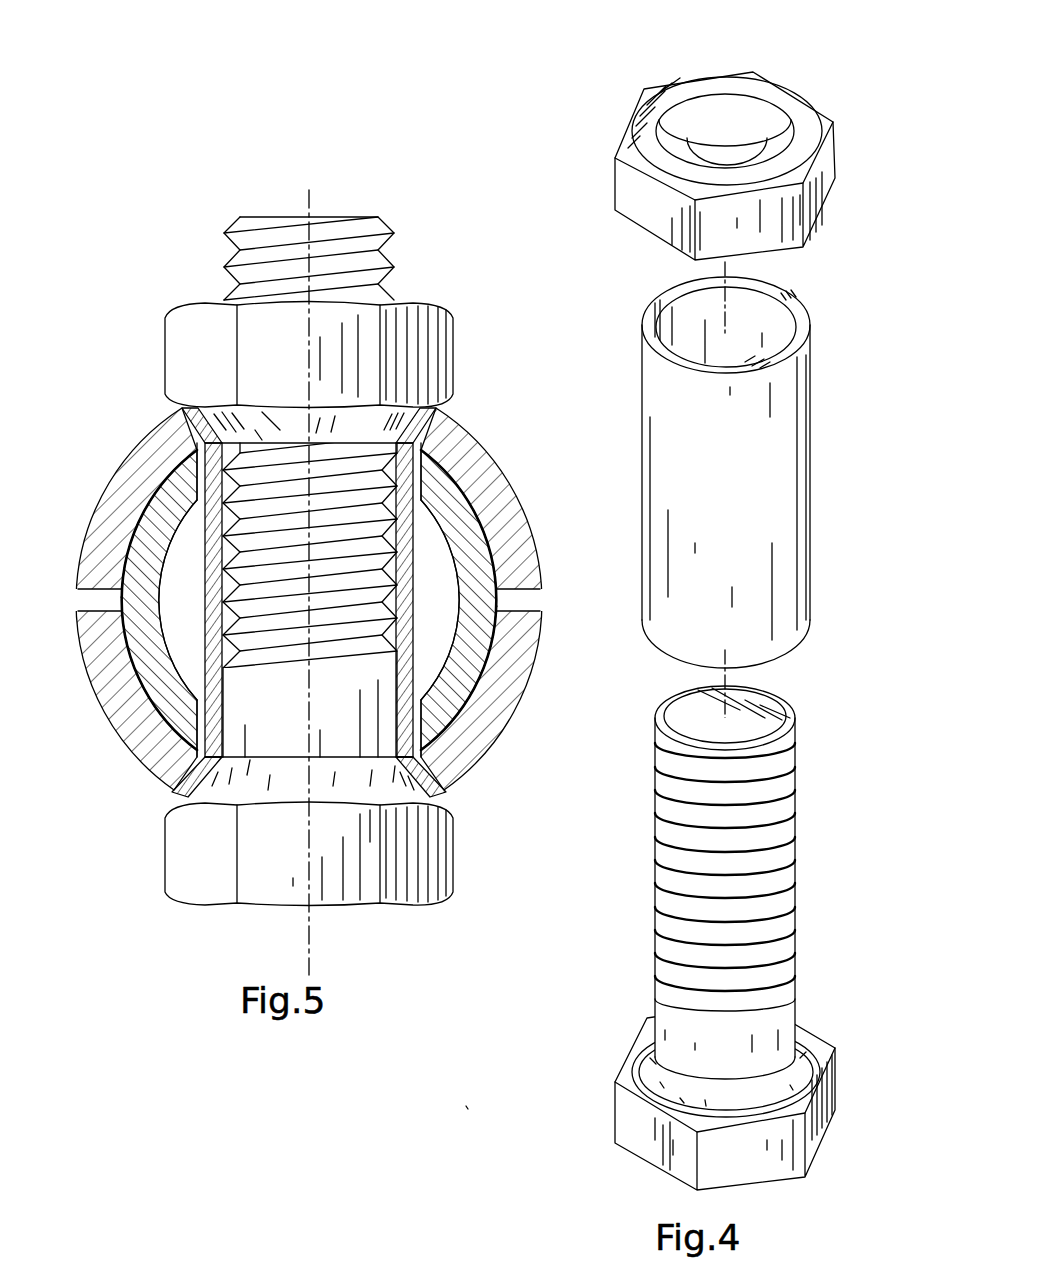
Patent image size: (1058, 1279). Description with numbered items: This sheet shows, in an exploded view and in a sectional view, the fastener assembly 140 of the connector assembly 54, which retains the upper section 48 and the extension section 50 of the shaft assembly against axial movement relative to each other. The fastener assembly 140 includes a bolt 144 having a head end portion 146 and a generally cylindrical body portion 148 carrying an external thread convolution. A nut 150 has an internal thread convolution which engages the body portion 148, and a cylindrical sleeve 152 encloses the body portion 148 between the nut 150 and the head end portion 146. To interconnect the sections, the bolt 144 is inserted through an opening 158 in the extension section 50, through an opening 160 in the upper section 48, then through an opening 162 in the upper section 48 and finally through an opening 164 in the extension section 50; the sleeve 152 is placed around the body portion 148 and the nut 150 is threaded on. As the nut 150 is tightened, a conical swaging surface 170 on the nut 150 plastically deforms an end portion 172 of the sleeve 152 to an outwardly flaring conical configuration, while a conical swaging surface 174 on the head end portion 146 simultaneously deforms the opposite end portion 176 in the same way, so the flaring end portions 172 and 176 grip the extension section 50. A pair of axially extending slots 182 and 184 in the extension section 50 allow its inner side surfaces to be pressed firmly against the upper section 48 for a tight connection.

In FIG. 5, the upper section 48 is at (140, 700).
In FIG. 5, the extension section 50 is at (82, 669).
In FIG. 5, the connector assembly 54 is at (366, 188).
In FIG. 5, the fastener assembly 140 is at (325, 207).
In FIG. 4, the fastener assembly 140 is at (749, 52).
In FIG. 5, the bolt 144 is at (390, 221).
In FIG. 4, the bolt 144 is at (808, 952).
In FIG. 5, the head end portion 146 is at (430, 896).
In FIG. 4, the head end portion 146 is at (833, 1120).
In FIG. 5, the body portion 148 is at (386, 533).
In FIG. 4, the body portion 148 is at (775, 832).
In FIG. 5, the nut 150 is at (437, 343).
In FIG. 4, the nut 150 is at (820, 180).
In FIG. 5, the cylindrical sleeve 152 is at (399, 618).
In FIG. 4, the cylindrical sleeve 152 is at (771, 472).
In FIG. 5, the opening 158 is at (170, 777).
In FIG. 5, the opening 160 is at (190, 735).
In FIG. 5, the opening 162 is at (137, 490).
In FIG. 5, the opening 164 is at (177, 433).
In FIG. 5, the conical swaging surface 170 is at (293, 420).
In FIG. 5, the end portion 172 is at (427, 415).
In FIG. 4, the end portion 172 is at (808, 325).
In FIG. 5, the conical swaging surface 174 is at (410, 800).
In FIG. 4, the conical swaging surface 174 is at (820, 1040).
In FIG. 5, the end portion 176 is at (442, 800).
In FIG. 4, the end portion 176 is at (808, 582).
In FIG. 5, the slot 182 is at (118, 553).
In FIG. 5, the slot 184 is at (532, 600).